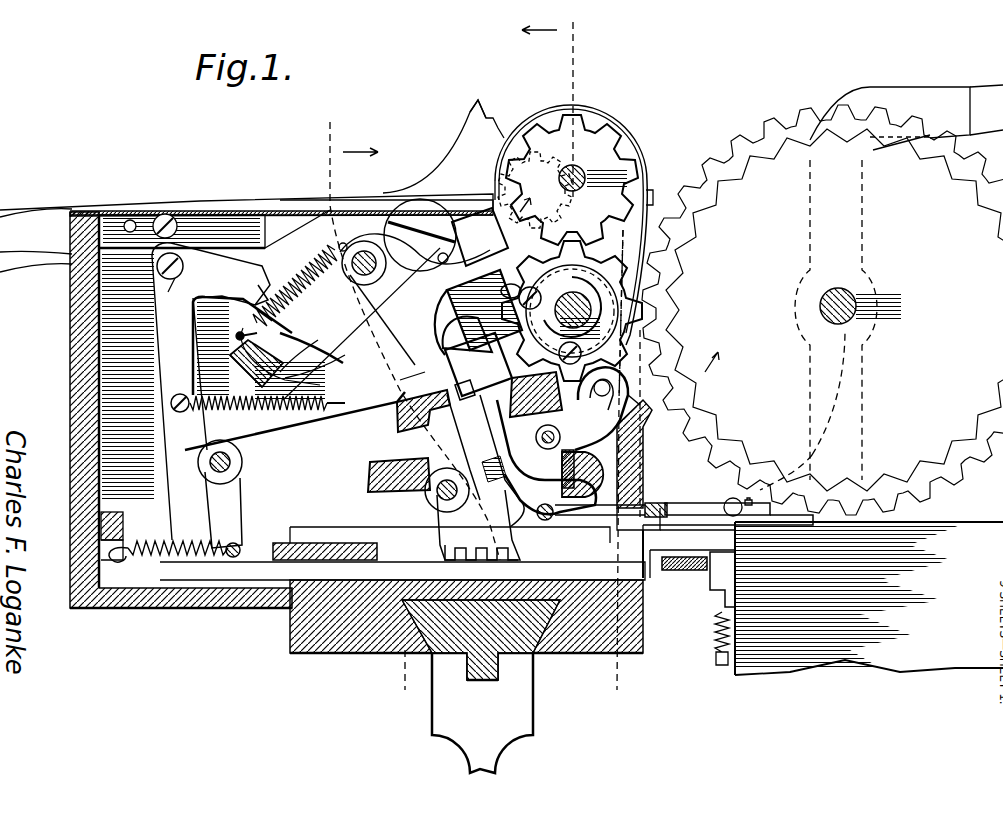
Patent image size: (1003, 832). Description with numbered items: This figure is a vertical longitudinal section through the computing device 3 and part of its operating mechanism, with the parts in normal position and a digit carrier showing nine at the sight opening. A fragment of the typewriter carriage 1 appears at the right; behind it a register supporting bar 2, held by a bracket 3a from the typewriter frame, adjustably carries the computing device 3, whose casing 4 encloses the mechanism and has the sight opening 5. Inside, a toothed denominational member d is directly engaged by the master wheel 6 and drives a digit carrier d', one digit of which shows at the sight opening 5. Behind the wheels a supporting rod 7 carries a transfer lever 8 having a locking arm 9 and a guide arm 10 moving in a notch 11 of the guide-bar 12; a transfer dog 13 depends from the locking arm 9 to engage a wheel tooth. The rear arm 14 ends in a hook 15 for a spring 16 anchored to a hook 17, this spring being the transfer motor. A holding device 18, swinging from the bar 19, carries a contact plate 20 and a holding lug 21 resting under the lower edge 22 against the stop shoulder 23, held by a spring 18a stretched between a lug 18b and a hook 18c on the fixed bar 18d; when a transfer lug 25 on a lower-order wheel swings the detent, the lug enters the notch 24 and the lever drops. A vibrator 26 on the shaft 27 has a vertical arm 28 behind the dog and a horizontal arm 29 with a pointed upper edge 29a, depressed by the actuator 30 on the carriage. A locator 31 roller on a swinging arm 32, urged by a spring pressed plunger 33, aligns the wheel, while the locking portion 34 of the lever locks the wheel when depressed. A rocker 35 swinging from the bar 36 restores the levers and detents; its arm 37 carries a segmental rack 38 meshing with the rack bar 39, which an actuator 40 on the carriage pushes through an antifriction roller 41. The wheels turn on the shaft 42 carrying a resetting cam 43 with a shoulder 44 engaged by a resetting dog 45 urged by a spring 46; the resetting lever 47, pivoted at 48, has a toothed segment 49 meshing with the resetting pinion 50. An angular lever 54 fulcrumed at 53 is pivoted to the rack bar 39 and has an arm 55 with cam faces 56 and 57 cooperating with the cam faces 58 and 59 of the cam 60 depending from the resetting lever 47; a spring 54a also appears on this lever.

The carriage 1 is at (900, 588).
The register supporting bar 2 is at (456, 640).
The computing device 3 is at (292, 632).
The bracket 3a is at (533, 712).
The casing 4 is at (72, 406).
The sight opening 5 is at (630, 130).
The master wheel 6 is at (780, 118).
The supporting rod 7 is at (230, 456).
The transfer lever 8 is at (496, 356).
The locking arm 9 is at (411, 410).
The guide arm 10 is at (478, 364).
The guide notch 11 is at (535, 436).
The guide-bar 12 is at (536, 391).
The transfer dog 13 is at (467, 334).
The rear arm 14 is at (240, 500).
The hook 15 is at (240, 548).
The spring 16 is at (145, 545).
The hook 17 is at (118, 560).
The holding device 18 is at (386, 317).
The spring 18a is at (268, 343).
The lug 18b is at (386, 200).
The hook 18c is at (238, 334).
The fixed bar 18d is at (252, 378).
The bar 19 is at (365, 250).
The contact plate 20 is at (492, 300).
The holding lug 21 is at (425, 425).
The lower edge 22 is at (340, 450).
The stop shoulder 23 is at (464, 391).
The notch 24 is at (400, 390).
The transfer lug 25 is at (512, 283).
The vibrator 26 is at (510, 504).
The shaft 27 is at (545, 522).
The vertical arm 28 is at (483, 447).
The horizontal arm 29 is at (600, 514).
The pointed upper edge 29a is at (689, 534).
The actuator 30 is at (690, 504).
The locator 31 is at (632, 388).
The swinging arm 32 is at (601, 408).
The spring pressed plunger 33 is at (560, 460).
The locking portion 34 is at (473, 237).
The rocker 35 is at (372, 492).
The bar 36 is at (437, 498).
The arm 37 is at (440, 530).
The segmental rack 38 is at (481, 541).
The rack bar 39 is at (402, 554).
The actuator 40 is at (715, 575).
The antifriction roller 41 is at (672, 572).
The shaft 42 is at (573, 305).
The resetting cam 43 is at (570, 308).
The shoulder 44 is at (530, 312).
The resetting dog 45 is at (556, 352).
The spring 46 is at (572, 311).
The resetting lever 47 is at (45, 204).
The pivot 48 is at (420, 235).
The toothed segment 49 is at (499, 122).
The resetting pinion 50 is at (597, 245).
The fulcrum 53 is at (167, 291).
The angular lever 54 is at (179, 398).
The spring 54a is at (270, 412).
The arm 55 is at (211, 319).
The cam face 56 is at (259, 360).
The cam face 57 is at (254, 294).
The cam face 58 is at (305, 345).
The cam face 59 is at (316, 356).
The cam 60 is at (305, 285).
The denominational member d is at (561, 207).
The digit carrier d' is at (593, 169).